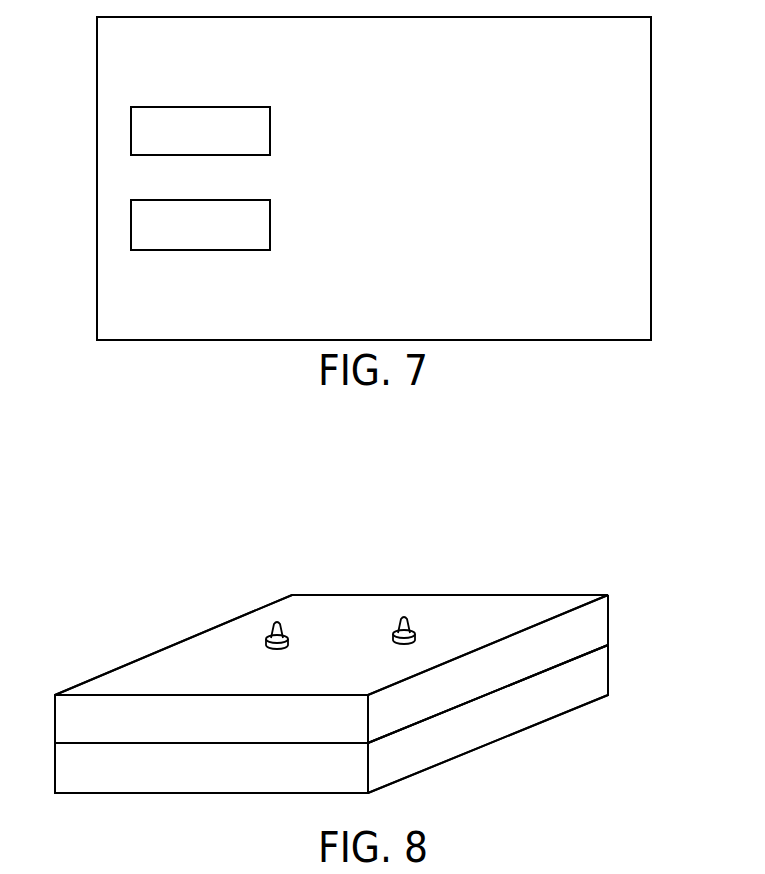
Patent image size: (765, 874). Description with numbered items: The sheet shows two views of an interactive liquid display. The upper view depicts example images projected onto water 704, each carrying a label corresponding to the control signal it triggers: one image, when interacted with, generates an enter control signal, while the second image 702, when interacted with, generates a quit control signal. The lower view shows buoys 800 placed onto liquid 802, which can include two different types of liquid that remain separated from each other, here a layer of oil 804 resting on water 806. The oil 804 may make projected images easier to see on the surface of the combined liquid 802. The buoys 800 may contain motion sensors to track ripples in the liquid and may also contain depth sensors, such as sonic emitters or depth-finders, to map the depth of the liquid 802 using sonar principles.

In FIG. 7, the second image 702 is at (131, 128).
In FIG. 7, the water 704 is at (131, 220).
In FIG. 8, the buoys 800 is at (404, 626).
In FIG. 8, the liquid 802 is at (354, 668).
In FIG. 8, the oil 804 is at (608, 617).
In FIG. 8, the water 806 is at (608, 665).